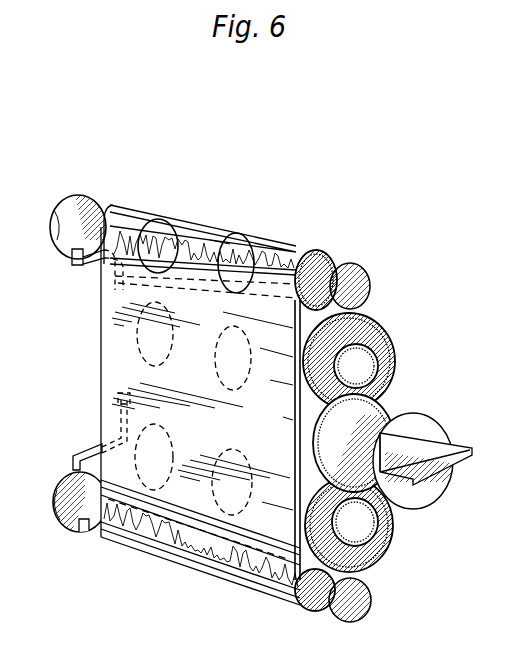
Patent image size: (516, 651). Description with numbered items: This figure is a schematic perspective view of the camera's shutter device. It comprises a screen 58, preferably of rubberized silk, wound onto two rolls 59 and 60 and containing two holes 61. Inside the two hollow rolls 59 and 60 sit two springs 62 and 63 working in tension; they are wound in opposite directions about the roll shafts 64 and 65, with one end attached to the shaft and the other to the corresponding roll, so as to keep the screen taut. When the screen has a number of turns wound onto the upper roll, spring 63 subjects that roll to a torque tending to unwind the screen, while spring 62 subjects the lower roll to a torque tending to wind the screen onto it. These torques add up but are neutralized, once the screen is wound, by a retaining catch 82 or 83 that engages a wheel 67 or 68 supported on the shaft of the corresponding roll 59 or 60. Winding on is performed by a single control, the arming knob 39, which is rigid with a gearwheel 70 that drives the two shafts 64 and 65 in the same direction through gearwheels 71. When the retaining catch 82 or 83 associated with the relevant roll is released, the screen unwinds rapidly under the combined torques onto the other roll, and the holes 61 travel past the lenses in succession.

The arming knob 39 is at (427, 420).
The screen 58 is at (118, 370).
The roll 59 is at (243, 233).
The roll 60 is at (233, 573).
The holes 61 is at (247, 233).
The spring 62 is at (180, 553).
The spring 63 is at (268, 250).
The roll shaft 64 is at (315, 608).
The roll shaft 65 is at (325, 252).
The wheel 67 is at (70, 210).
The wheel 68 is at (68, 508).
The gearwheel 70 is at (388, 410).
The gearwheels 71 is at (358, 362).
The retaining catch 82 is at (78, 265).
The retaining catch 83 is at (88, 447).